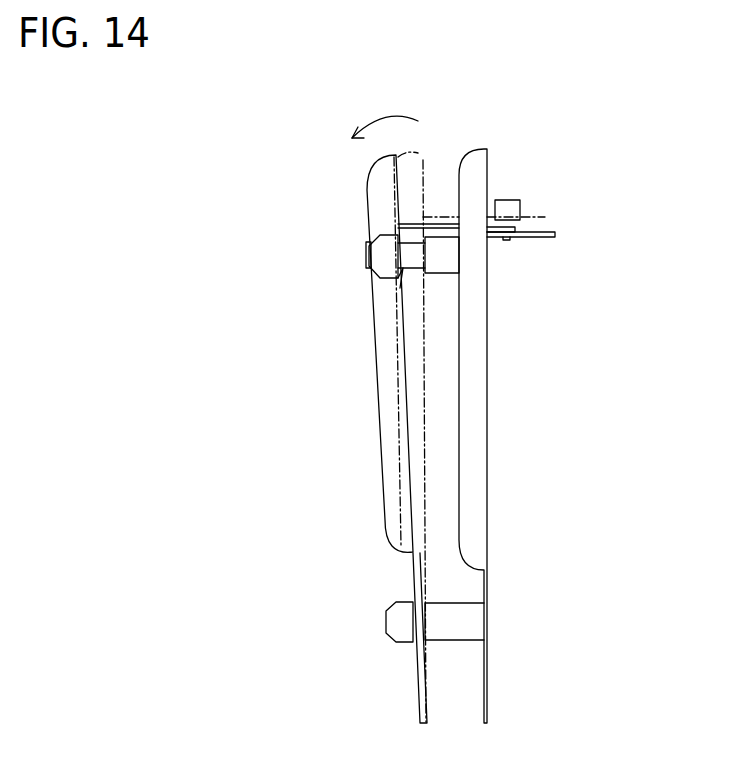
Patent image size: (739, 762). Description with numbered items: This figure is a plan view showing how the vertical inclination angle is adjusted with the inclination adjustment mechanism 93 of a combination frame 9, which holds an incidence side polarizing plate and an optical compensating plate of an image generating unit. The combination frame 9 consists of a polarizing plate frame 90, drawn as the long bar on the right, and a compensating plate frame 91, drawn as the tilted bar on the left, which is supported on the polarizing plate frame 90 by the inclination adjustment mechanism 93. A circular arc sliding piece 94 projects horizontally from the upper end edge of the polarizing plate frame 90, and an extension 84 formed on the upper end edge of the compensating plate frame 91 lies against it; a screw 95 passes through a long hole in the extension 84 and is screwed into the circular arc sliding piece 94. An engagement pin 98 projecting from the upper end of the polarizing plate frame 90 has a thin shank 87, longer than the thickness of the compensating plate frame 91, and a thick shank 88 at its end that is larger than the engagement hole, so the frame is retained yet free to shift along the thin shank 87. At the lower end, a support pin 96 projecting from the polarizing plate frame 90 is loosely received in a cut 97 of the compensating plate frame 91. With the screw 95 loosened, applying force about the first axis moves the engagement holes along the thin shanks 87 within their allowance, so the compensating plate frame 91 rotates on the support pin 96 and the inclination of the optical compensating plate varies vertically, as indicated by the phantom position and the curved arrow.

The combination frame 9 is at (513, 130).
The compensating plate frame 91 is at (368, 190).
The inclination adjustment mechanism 93 is at (252, 198).
The engagement pin 98 is at (358, 242).
The thick shank 88 is at (366, 258).
The thin shank 87 is at (398, 278).
The extension 84 is at (500, 228).
The screw 95 is at (522, 208).
The circular arc sliding piece 94 is at (536, 238).
The polarizing plate frame 90 is at (487, 393).
The support pin 96 is at (386, 621).
The cut 97 is at (415, 647).